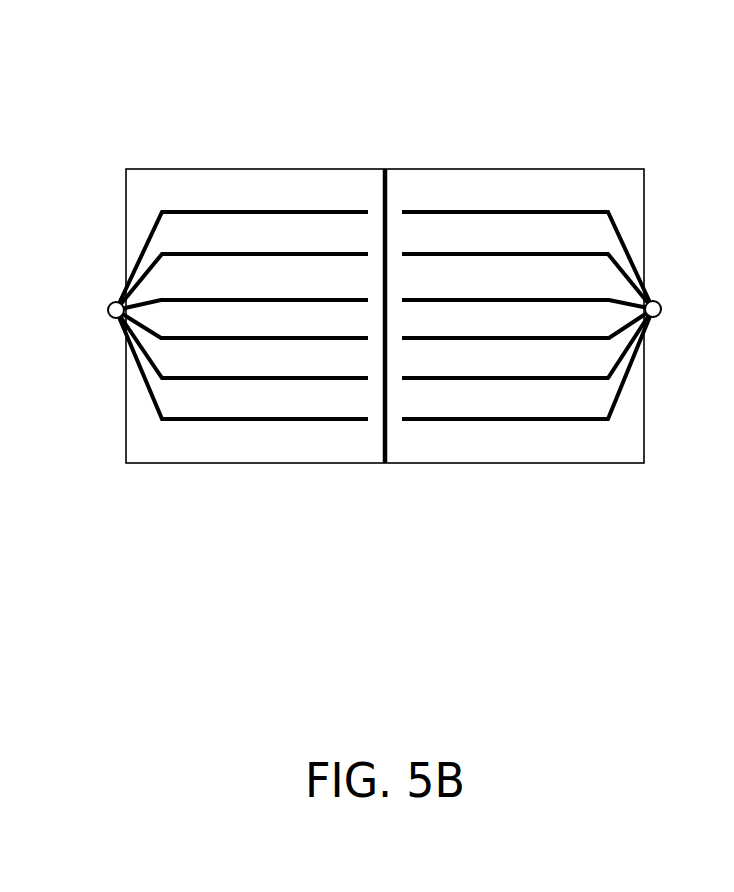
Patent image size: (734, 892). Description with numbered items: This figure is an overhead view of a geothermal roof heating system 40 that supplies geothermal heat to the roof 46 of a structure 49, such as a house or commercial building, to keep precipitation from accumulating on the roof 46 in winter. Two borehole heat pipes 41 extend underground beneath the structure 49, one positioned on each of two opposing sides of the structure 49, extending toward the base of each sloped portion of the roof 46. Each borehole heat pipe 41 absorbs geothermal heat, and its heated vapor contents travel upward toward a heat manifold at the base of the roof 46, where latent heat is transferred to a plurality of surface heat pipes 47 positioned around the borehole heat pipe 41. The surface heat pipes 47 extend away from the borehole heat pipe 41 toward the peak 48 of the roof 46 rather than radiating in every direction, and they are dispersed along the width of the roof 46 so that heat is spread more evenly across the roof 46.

The geothermal roof heating system 40 is at (354, 336).
The borehole heat pipe 41 is at (110, 304).
The roof 46 is at (206, 177).
The surface heat pipe 47 is at (333, 210).
The peak 48 is at (385, 477).
The structure 49 is at (0, 252).